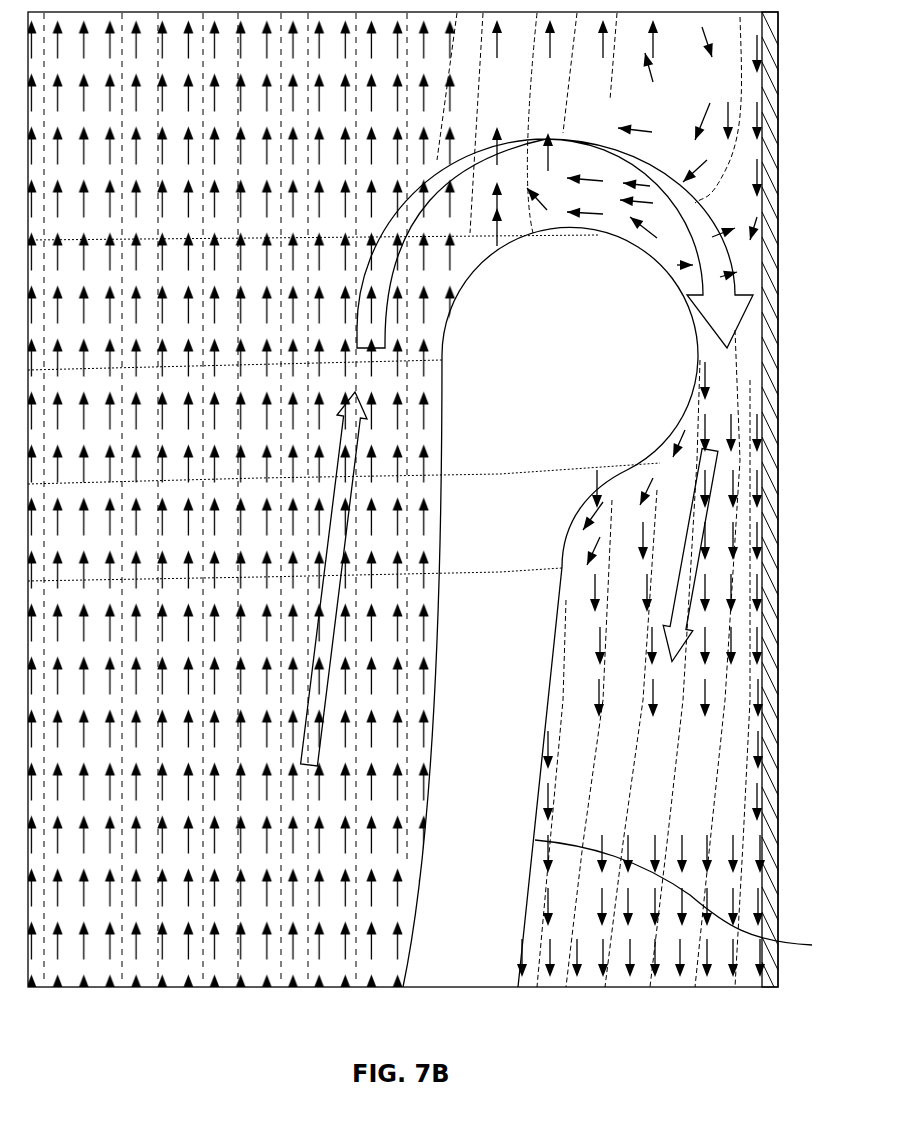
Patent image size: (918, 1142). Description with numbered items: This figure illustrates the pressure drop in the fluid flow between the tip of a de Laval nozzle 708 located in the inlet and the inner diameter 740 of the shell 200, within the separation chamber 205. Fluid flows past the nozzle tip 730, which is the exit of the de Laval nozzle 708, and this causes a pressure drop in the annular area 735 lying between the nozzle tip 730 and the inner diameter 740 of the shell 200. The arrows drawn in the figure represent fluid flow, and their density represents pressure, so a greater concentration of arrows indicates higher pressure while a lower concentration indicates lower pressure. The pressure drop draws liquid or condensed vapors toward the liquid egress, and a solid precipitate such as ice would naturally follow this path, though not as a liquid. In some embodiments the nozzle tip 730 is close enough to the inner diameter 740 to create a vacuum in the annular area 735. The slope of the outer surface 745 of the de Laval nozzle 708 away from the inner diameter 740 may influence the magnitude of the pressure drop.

The shell 200 is at (777, 642).
The separation chamber 205 is at (245, 131).
The nozzle tip 730 is at (585, 363).
The annular area 735 is at (753, 270).
The inner diameter 740 is at (768, 100).
The de Laval nozzle 708 is at (535, 625).
The outer surface 745 is at (697, 902).